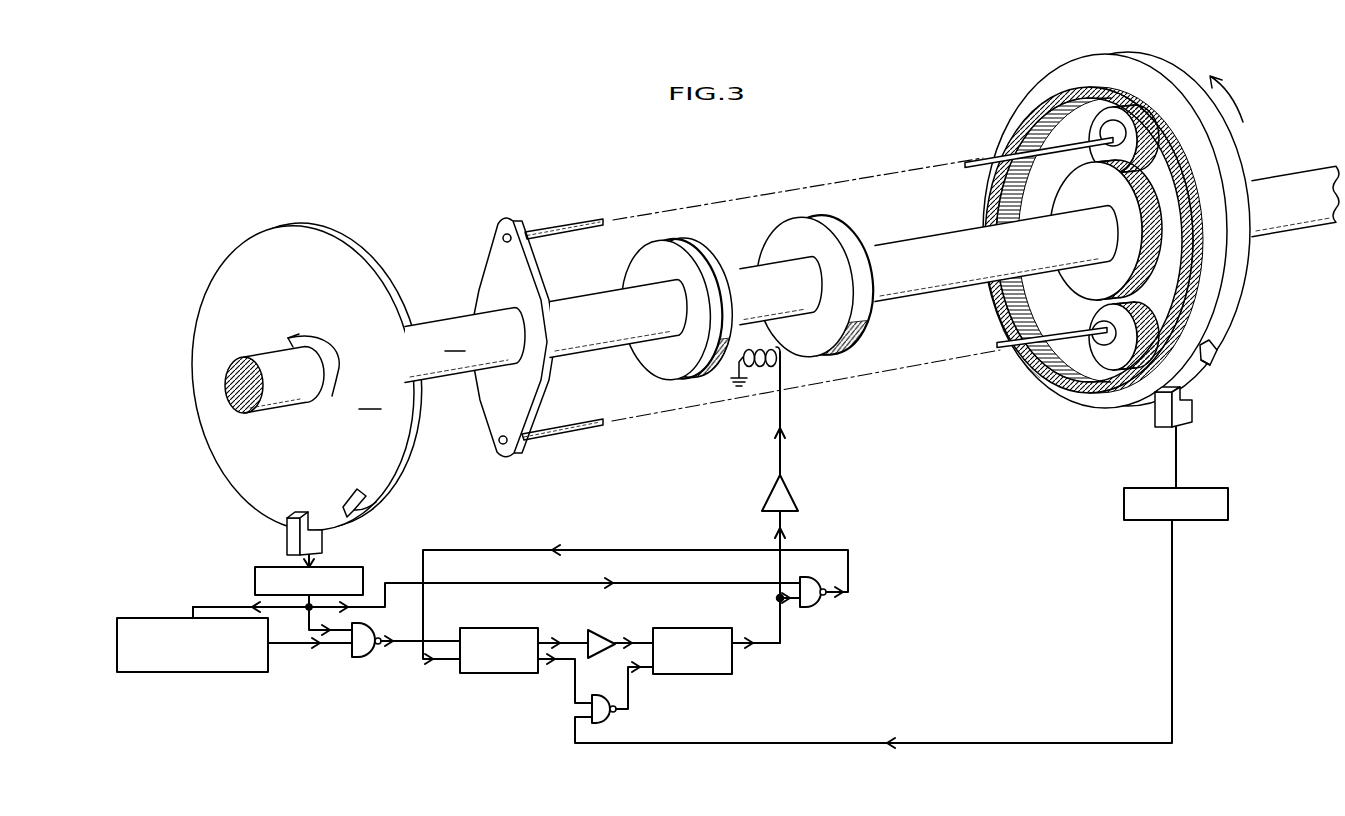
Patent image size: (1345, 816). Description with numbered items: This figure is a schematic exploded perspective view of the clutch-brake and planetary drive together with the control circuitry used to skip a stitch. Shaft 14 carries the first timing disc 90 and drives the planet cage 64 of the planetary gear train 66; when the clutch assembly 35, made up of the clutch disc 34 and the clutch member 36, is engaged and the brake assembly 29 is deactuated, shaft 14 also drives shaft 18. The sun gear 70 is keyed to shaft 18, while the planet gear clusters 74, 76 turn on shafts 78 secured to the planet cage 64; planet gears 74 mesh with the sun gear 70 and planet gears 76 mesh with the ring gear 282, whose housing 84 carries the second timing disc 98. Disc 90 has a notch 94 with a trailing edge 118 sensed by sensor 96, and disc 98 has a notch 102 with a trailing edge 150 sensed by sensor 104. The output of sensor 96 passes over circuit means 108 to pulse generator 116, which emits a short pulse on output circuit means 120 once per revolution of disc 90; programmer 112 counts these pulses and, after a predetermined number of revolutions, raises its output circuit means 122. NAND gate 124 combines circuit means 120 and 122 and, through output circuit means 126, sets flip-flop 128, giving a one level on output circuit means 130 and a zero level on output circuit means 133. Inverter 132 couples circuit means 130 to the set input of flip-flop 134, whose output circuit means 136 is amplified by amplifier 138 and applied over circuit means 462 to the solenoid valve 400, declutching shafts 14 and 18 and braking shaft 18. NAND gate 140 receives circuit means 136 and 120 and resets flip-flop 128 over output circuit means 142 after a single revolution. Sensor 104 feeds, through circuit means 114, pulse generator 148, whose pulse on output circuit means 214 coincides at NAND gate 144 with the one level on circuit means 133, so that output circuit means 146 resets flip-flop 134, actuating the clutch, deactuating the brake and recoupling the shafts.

The shaft 14 is at (375, 361).
The shaft 18 is at (926, 289).
The brake assembly 29 is at (806, 203).
The clutch disc 34 is at (713, 256).
The clutch assembly 35 is at (683, 229).
The clutch member 36 is at (654, 278).
The planet cage 64 is at (492, 268).
The planetary gear train 66 is at (988, 126).
The sun gear 70 is at (1078, 279).
The planet gears 74 is at (1116, 128).
The planet gears 76 is at (1127, 167).
The shaft 78 is at (557, 228).
The ring gear housing 84 is at (1190, 158).
The first timing disc 90 is at (307, 377).
The notch 94 is at (376, 507).
The first pickup or sensor device 96 is at (287, 536).
The second timing disc 98 is at (1240, 286).
The notch 102 is at (1217, 356).
The second pickup device or sensor 104 is at (1160, 416).
The circuit means 108 is at (313, 564).
The programmer 112 is at (198, 674).
The circuit means 114 is at (1178, 453).
The pulse generator 116 is at (356, 567).
The trailing edge 118 is at (345, 508).
The output circuit means 120 is at (300, 605).
The output circuit means 122 is at (295, 648).
The NAND gate 124 is at (376, 630).
The output circuit means 126 is at (407, 646).
The flip-flop 128 is at (492, 628).
The output circuit means 130 is at (571, 640).
The inverter 132 is at (604, 632).
The output circuit means 133 is at (563, 680).
The flip-flop 134 is at (692, 628).
The output circuit means 136 is at (768, 648).
The amplifier 138 is at (790, 488).
The NAND gate 140 is at (815, 605).
The output circuit means 142 is at (852, 573).
The NAND gate 144 is at (612, 725).
The output circuit means 146 is at (630, 698).
The pulse generator 148 is at (1230, 500).
The trailing edge 150 is at (1212, 362).
The output circuit means 214 is at (975, 743).
The ring gear 282 is at (1012, 350).
The solenoid valve 400 is at (762, 370).
The circuit means 462 is at (783, 447).